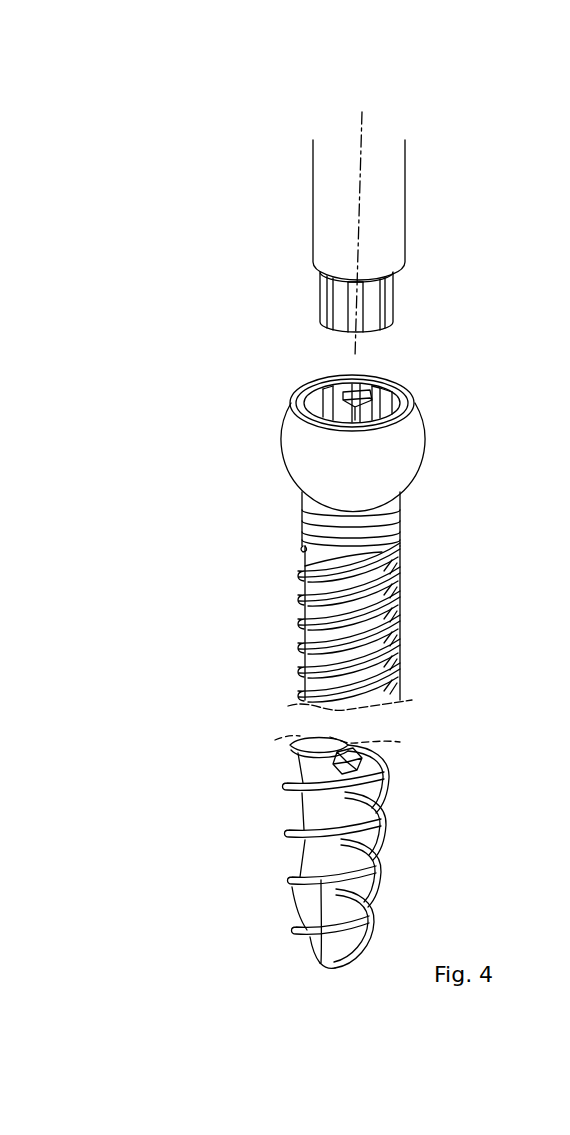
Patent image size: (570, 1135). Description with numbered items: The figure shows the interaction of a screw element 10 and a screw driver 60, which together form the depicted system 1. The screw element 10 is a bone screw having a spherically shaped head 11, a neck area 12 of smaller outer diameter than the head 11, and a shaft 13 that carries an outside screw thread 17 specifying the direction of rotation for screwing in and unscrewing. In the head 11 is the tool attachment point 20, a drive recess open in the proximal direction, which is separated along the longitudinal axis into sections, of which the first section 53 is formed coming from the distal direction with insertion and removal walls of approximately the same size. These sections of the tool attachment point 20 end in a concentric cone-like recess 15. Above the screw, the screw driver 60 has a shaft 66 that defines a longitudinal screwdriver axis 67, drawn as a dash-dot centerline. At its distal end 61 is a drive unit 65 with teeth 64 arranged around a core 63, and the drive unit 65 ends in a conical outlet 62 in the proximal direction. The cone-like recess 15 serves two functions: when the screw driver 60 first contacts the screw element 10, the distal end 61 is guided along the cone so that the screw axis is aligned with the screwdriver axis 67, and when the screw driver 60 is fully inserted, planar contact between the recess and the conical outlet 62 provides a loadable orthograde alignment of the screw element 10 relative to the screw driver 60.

The system 1 is at (198, 395).
The screw element 10 is at (337, 650).
The head 11 is at (413, 460).
The neck area 12 is at (397, 508).
The shaft 13 is at (387, 628).
The outside screw thread 17 is at (417, 755).
The cone-like recess 15 is at (313, 397).
The tool attachment point 20 is at (330, 408).
The first section 53 is at (363, 396).
The screw driver 60 is at (378, 218).
The distal end 61 is at (377, 330).
The conical outlet 62 is at (335, 279).
The core 63 is at (373, 300).
The teeth 64 is at (348, 321).
The drive unit 65 is at (363, 290).
The shaft 66 is at (317, 168).
The longitudinal screwdriver axis 67 is at (362, 180).